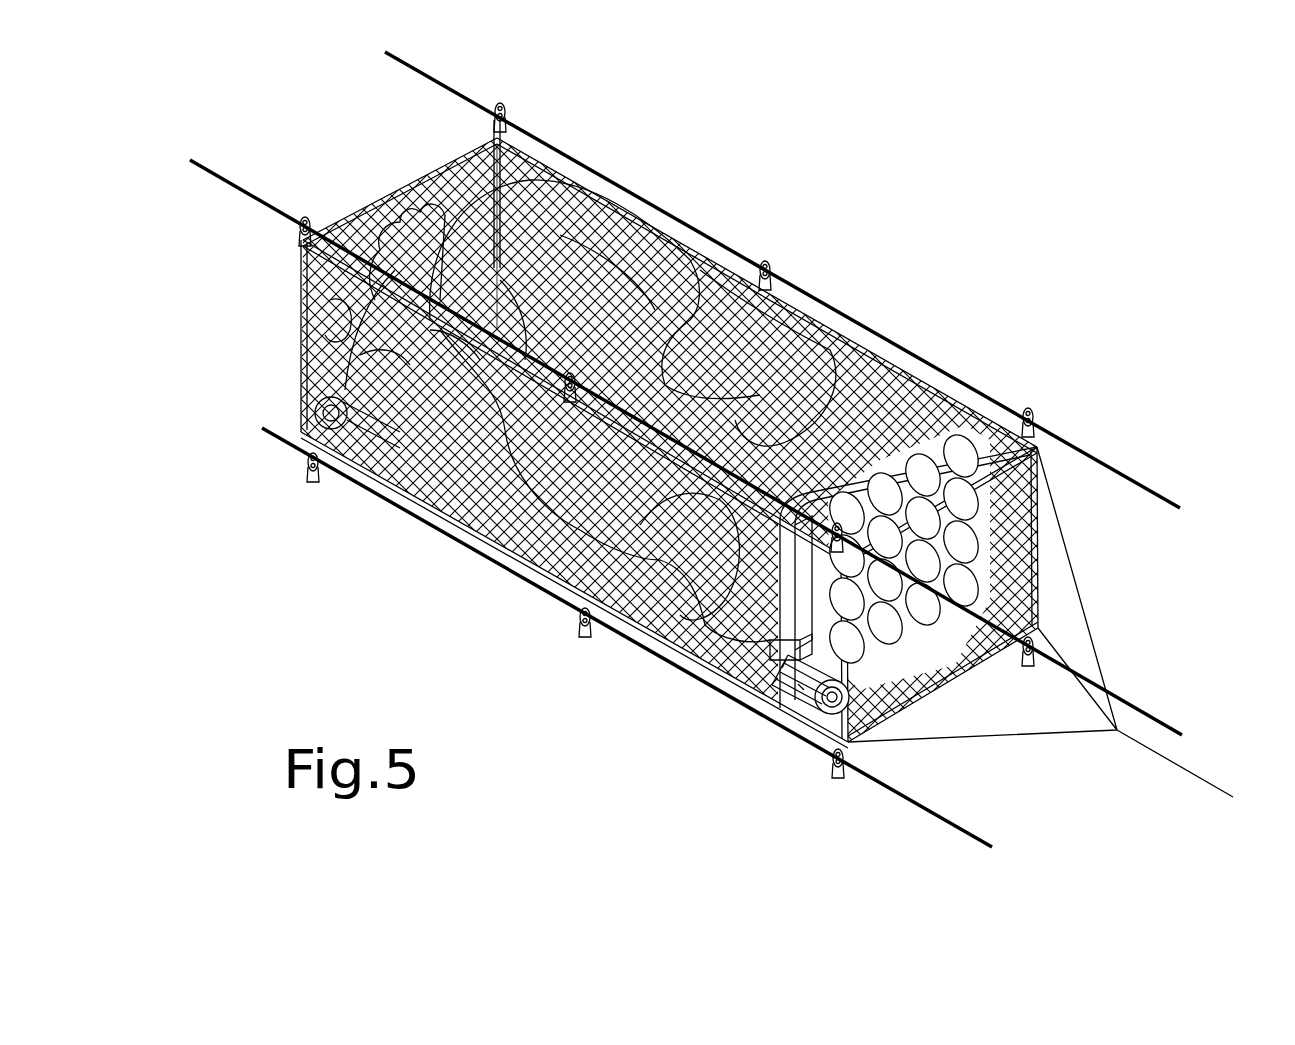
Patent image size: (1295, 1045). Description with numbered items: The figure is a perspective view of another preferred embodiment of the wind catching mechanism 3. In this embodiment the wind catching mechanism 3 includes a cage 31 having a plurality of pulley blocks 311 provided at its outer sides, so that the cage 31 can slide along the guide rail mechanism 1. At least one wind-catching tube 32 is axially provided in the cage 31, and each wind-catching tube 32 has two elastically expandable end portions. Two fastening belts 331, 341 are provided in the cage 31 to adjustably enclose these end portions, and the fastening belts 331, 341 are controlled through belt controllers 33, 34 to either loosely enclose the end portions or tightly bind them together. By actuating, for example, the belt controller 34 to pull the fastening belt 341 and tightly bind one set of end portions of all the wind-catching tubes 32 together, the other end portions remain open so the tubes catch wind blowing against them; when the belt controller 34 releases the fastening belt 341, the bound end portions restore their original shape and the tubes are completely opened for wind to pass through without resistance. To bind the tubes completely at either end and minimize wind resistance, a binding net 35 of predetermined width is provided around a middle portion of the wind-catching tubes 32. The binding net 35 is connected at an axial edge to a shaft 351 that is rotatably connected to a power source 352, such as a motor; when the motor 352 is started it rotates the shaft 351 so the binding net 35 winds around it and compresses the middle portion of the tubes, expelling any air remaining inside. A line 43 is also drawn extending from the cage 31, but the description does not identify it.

The guide rail mechanism 1 is at (615, 197).
The wind catching mechanism 3 is at (846, 327).
The cage 31 is at (445, 192).
The pulley blocks 311 is at (1036, 414).
The wind-catching tube 32 is at (945, 402).
The belt controller 33 is at (775, 650).
The fastening belt 331 is at (993, 532).
The belt controller 34 is at (355, 455).
The fastening belt 341 is at (372, 327).
The binding net 35 is at (510, 175).
The shaft 351 is at (784, 662).
The power source 352 is at (800, 690).
The pull rope 43 is at (1198, 775).